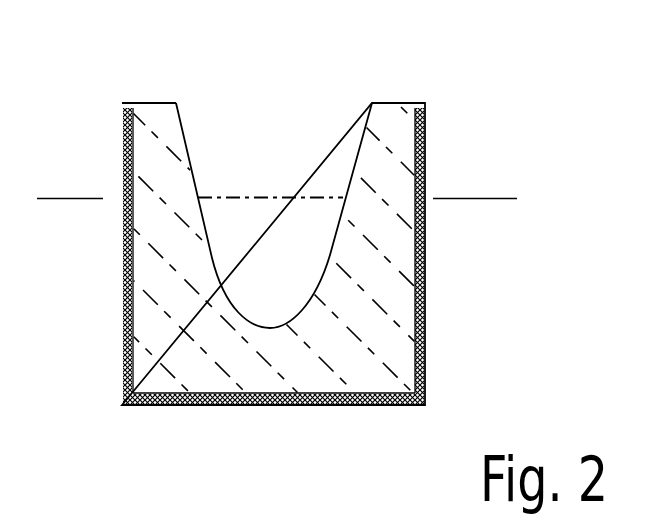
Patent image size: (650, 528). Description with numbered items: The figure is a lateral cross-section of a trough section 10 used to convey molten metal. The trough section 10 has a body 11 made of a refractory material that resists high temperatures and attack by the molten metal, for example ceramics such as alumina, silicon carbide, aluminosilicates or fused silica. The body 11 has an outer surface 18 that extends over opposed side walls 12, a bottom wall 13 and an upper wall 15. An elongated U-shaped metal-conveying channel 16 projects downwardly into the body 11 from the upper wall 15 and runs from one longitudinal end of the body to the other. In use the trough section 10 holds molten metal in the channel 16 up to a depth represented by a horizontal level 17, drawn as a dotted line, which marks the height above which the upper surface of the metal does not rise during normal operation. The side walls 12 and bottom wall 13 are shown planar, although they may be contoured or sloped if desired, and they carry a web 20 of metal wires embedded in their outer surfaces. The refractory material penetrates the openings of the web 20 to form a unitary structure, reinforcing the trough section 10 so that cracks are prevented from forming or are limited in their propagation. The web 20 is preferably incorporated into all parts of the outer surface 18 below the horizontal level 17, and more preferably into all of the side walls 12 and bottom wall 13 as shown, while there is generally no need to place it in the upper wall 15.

The trough section 10 is at (450, 126).
The body 11 is at (222, 291).
The side walls 12 is at (123, 311).
The bottom wall 13 is at (284, 406).
The upper wall 15 is at (147, 102).
The metal-conveying channel 16 is at (280, 144).
The horizontal level 17 is at (262, 192).
The outer surface 18 is at (121, 365).
The web 20 is at (122, 180).